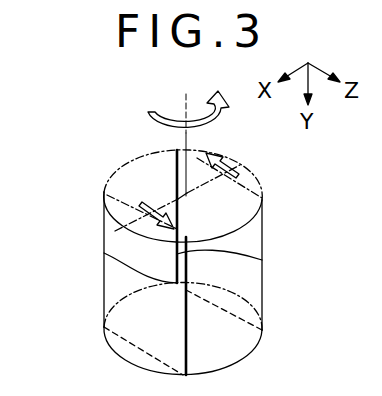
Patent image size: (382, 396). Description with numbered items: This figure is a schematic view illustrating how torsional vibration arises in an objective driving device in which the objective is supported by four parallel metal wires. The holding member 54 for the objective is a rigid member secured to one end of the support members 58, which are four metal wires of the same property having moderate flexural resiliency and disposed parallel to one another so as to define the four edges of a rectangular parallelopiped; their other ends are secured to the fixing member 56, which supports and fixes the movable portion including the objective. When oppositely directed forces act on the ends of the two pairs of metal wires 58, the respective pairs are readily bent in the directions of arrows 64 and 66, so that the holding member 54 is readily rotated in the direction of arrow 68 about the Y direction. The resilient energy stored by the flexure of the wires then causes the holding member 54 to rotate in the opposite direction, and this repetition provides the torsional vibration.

The holding member 54 is at (148, 149).
The fixing member 56 is at (244, 361).
The support members 58 is at (104, 253).
The arrow 64 is at (154, 199).
The arrow 66 is at (242, 164).
The arrow 68 is at (225, 115).